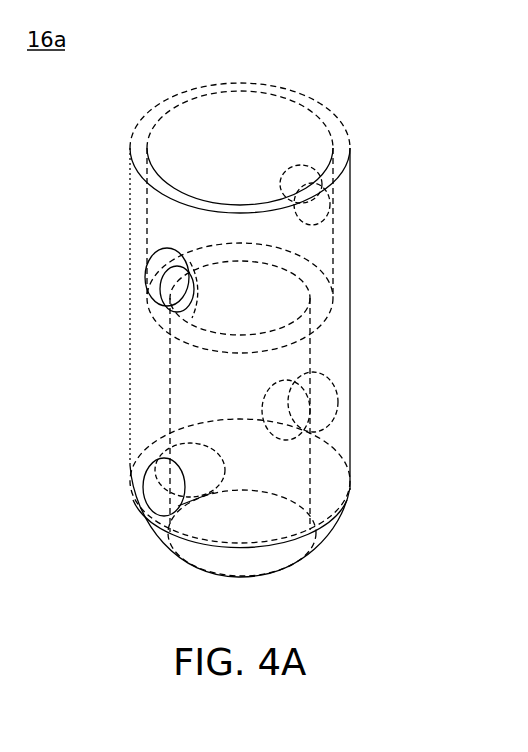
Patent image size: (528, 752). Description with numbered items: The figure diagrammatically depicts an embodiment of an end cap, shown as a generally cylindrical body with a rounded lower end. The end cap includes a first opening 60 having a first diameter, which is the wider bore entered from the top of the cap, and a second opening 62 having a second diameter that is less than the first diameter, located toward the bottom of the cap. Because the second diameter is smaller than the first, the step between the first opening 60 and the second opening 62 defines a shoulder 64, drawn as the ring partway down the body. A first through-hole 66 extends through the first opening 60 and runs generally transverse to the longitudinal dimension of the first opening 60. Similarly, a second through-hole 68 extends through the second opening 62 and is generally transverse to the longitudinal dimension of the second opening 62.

The first opening 60 is at (240, 112).
The second opening 62 is at (268, 553).
The shoulder 64 is at (315, 288).
The first through-hole 66 is at (158, 271).
The second through-hole 68 is at (162, 483).